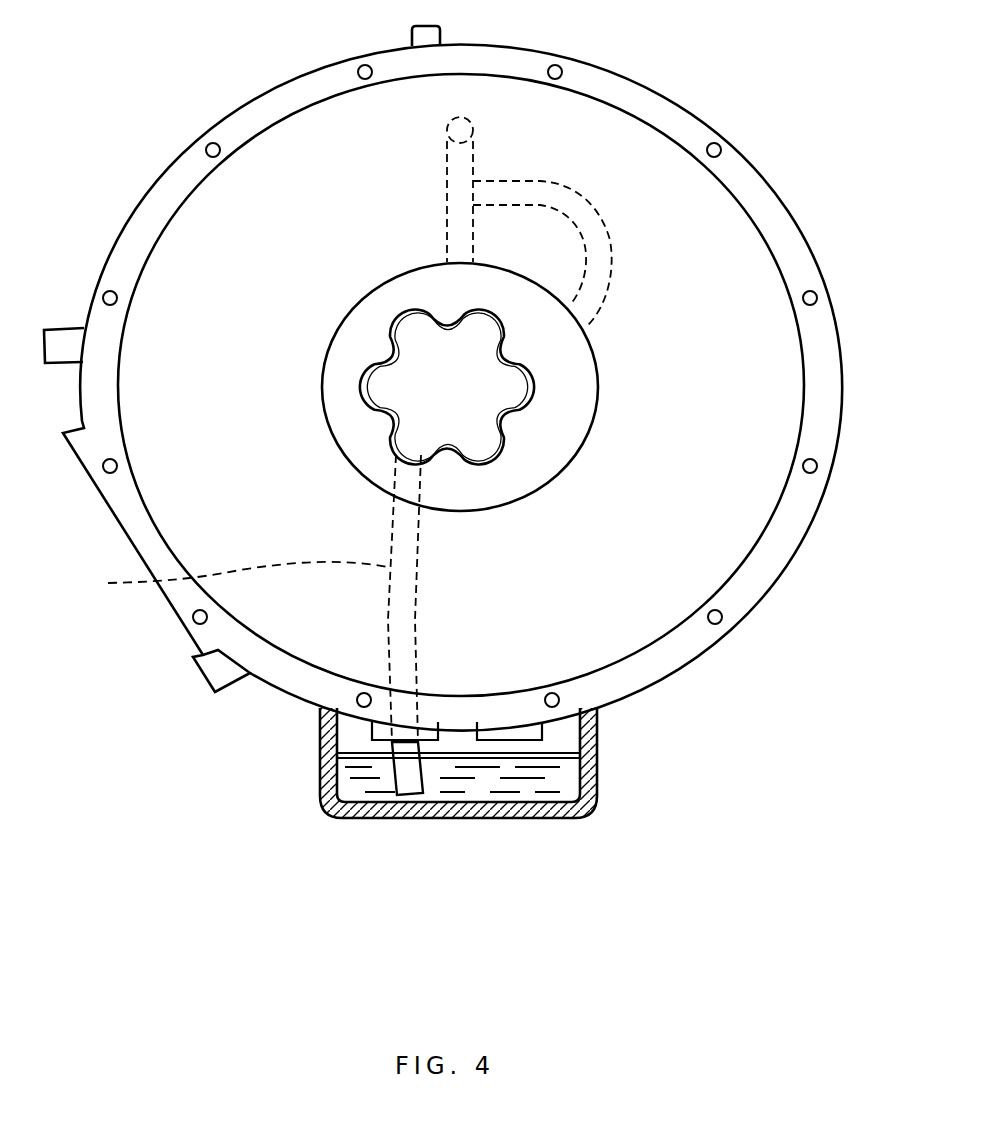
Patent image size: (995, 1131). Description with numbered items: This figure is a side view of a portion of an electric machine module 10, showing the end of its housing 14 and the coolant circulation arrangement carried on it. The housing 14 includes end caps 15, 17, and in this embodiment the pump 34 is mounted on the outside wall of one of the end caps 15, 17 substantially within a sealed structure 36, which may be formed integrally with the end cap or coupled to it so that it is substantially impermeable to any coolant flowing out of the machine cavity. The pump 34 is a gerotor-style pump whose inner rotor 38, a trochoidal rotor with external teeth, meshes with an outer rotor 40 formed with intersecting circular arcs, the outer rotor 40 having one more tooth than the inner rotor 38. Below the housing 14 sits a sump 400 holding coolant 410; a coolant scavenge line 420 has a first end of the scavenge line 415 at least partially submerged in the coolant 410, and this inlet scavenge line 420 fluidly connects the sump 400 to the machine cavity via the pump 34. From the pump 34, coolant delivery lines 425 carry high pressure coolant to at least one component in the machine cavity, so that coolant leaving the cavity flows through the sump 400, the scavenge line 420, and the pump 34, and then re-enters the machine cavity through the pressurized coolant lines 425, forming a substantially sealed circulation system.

The electric machine module 10 is at (160, 106).
The housing 14 is at (262, 719).
The first end cap 15 is at (461, 359).
The second end cap 17 is at (330, 128).
The pump 34 is at (396, 318).
The sealed structure 36 is at (418, 300).
The inner rotor 38 is at (440, 372).
The outer rotor 40 is at (520, 413).
The sump 400 is at (548, 813).
The coolant 410 is at (347, 768).
The first end of the scavenge line 415 is at (408, 792).
The coolant scavenge line 420 is at (223, 580).
The coolant delivery lines 425 is at (583, 202).